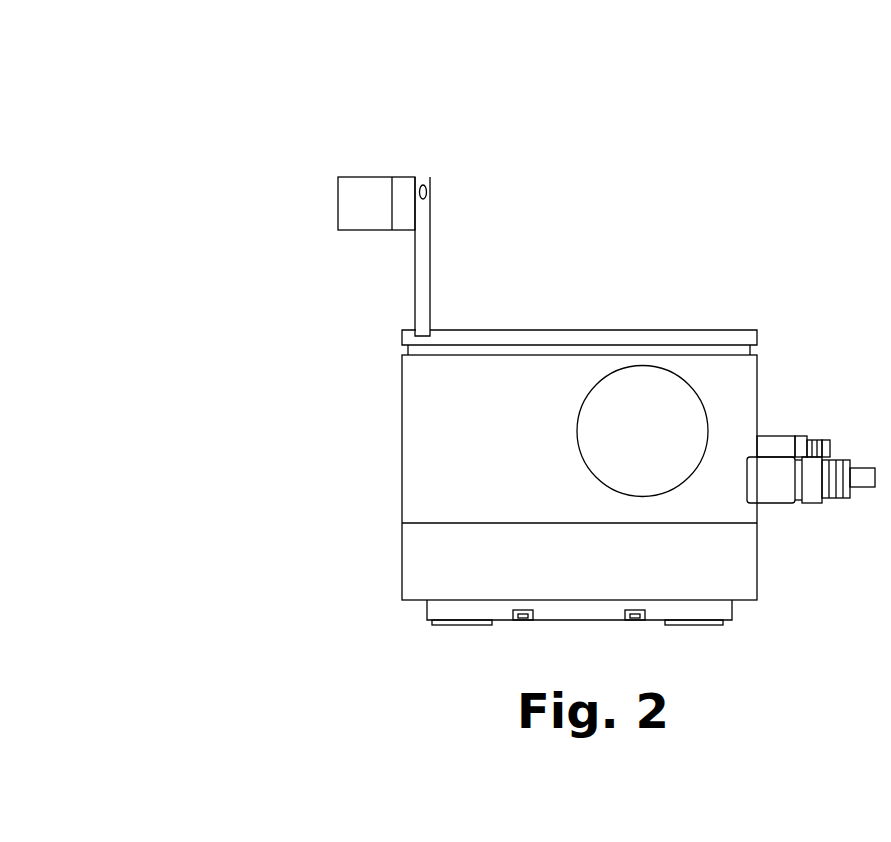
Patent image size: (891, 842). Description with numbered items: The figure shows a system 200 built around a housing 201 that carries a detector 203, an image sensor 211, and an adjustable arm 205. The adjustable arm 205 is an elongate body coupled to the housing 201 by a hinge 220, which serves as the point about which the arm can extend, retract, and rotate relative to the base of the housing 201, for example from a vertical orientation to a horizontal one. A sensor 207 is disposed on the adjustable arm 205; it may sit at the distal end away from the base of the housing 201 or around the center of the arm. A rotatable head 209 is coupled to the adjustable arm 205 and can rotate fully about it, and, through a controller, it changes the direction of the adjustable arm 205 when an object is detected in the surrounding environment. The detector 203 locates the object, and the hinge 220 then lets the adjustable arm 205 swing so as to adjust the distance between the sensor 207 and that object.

The system 200 is at (178, 104).
The housing 201 is at (600, 331).
The detector 203 is at (675, 413).
The adjustable arm 205 is at (430, 267).
The sensor 207 is at (430, 192).
The rotatable head 209 is at (407, 177).
The image sensor 211 is at (338, 207).
The hinge 220 is at (402, 335).